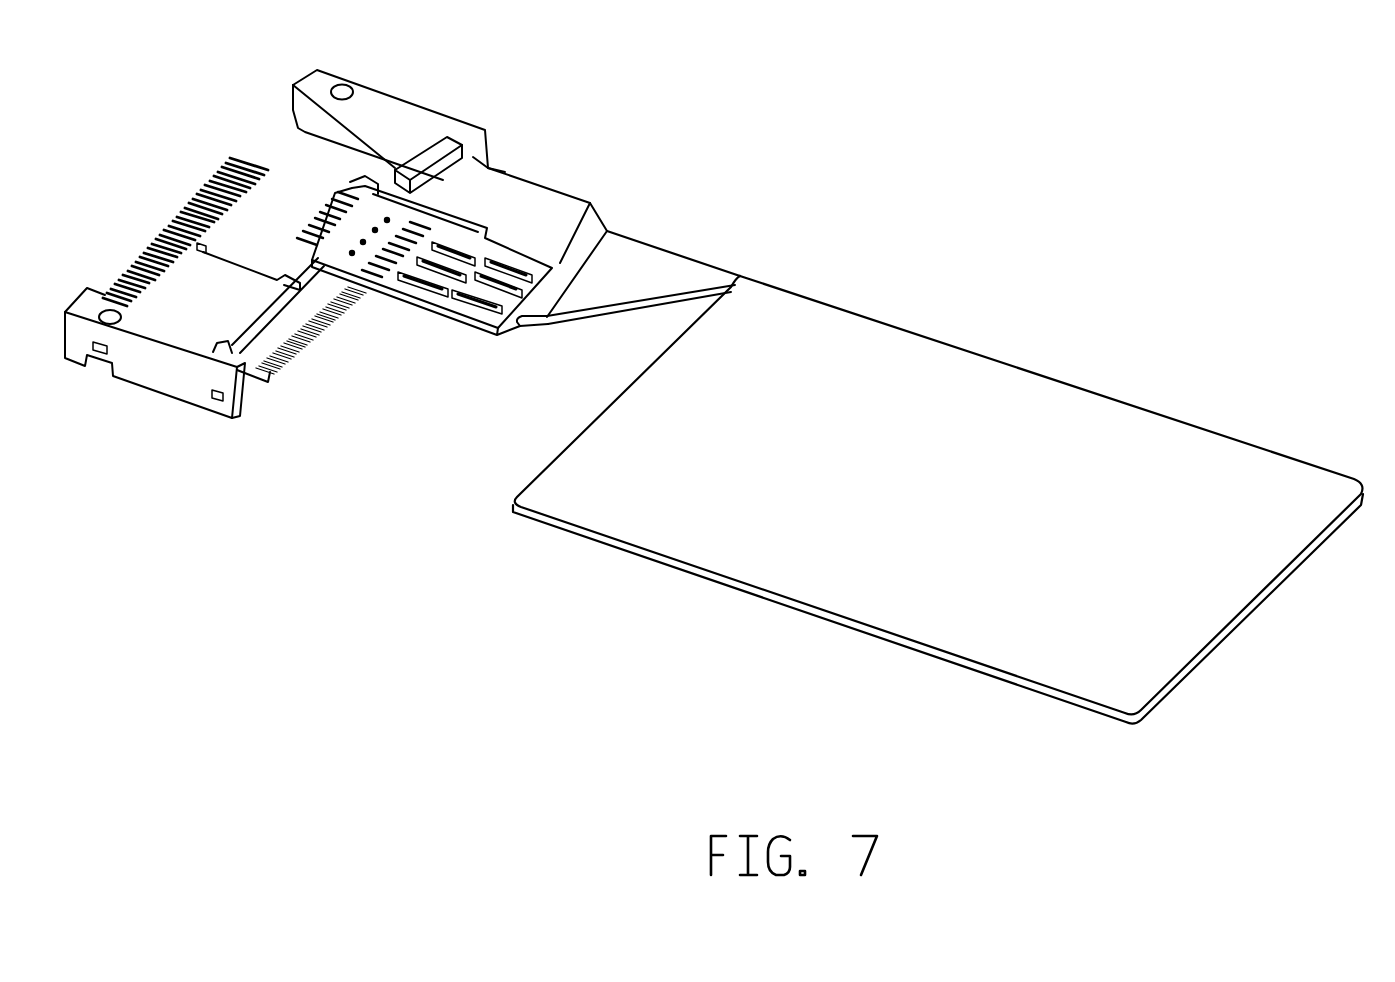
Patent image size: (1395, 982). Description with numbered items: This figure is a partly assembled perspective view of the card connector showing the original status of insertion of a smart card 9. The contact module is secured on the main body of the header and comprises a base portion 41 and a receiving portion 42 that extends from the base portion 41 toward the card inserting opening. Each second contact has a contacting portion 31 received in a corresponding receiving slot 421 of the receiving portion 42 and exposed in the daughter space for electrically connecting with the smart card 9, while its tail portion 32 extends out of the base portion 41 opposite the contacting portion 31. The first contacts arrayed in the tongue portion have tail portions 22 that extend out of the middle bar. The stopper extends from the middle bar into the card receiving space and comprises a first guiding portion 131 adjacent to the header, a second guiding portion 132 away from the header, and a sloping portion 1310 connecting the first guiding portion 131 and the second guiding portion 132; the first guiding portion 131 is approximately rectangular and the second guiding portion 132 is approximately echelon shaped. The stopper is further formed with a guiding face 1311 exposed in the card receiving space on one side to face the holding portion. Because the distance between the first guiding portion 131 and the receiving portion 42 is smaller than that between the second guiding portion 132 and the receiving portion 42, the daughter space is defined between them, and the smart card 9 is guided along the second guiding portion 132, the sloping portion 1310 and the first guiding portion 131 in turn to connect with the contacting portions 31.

The smart card 9 is at (920, 385).
The tail portion 22 is at (150, 253).
The contacting portion 31 is at (476, 308).
The tail portion 32 is at (228, 160).
The base portion 41 is at (307, 175).
The receiving portion 42 is at (425, 235).
The receiving slot 421 is at (470, 257).
The first guiding portion 131 is at (537, 203).
The sloping portion 1310 is at (593, 228).
The guiding face 1311 is at (587, 317).
The second guiding portion 132 is at (657, 272).